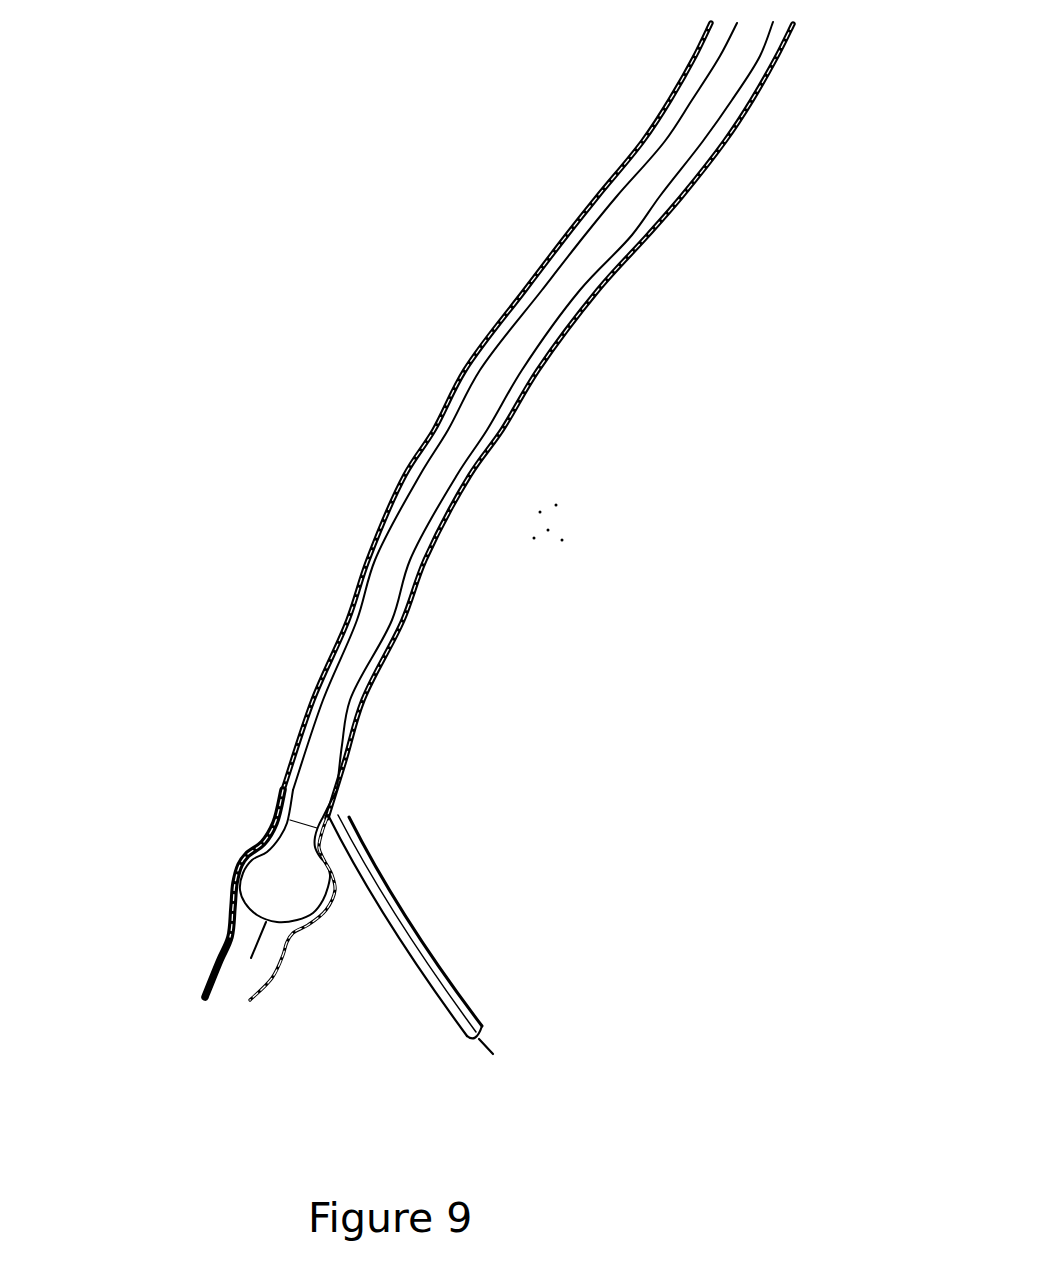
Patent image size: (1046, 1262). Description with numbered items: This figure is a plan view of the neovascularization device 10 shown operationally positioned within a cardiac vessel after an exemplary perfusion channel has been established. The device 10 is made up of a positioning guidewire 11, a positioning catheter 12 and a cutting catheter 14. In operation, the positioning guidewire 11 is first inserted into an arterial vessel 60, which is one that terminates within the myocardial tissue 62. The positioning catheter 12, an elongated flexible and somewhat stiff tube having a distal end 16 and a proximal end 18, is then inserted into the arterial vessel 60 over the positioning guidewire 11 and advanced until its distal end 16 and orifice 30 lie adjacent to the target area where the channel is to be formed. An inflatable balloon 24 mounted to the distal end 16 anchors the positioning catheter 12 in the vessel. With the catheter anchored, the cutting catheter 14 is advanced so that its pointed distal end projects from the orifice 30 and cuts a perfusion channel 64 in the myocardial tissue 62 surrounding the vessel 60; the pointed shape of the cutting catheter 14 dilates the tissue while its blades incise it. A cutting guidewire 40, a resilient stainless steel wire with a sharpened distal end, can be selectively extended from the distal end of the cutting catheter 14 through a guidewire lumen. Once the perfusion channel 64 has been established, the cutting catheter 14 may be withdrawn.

The neovascularization device 10 is at (150, 699).
The positioning guidewire 11 is at (255, 945).
The positioning catheter 12 is at (407, 535).
The cutting catheter 14 is at (450, 978).
The distal end of positioning catheter 16 is at (317, 786).
The proximal end of positioning catheter 18 is at (738, 56).
The inflatable balloon 24 is at (280, 867).
The orifice 30 is at (340, 825).
The cutting guidewire 40 is at (484, 1043).
The arterial vessel 60 is at (607, 180).
The myocardial tissue 62 is at (538, 523).
The perfusion channel 64 is at (410, 908).